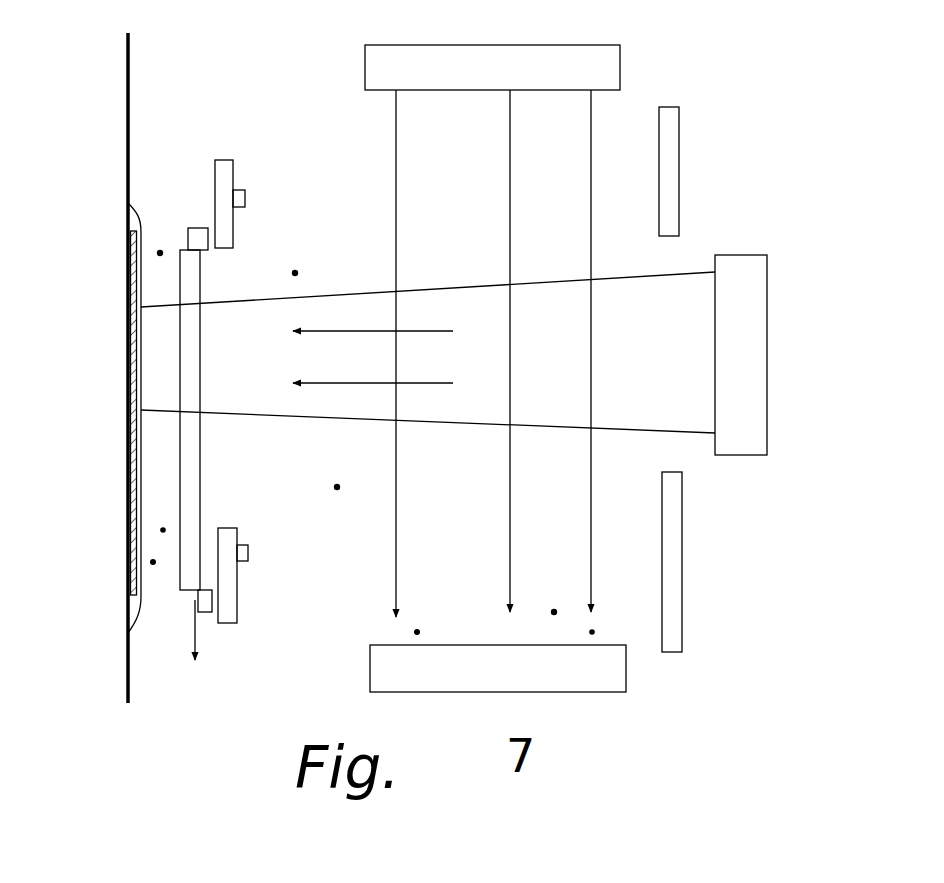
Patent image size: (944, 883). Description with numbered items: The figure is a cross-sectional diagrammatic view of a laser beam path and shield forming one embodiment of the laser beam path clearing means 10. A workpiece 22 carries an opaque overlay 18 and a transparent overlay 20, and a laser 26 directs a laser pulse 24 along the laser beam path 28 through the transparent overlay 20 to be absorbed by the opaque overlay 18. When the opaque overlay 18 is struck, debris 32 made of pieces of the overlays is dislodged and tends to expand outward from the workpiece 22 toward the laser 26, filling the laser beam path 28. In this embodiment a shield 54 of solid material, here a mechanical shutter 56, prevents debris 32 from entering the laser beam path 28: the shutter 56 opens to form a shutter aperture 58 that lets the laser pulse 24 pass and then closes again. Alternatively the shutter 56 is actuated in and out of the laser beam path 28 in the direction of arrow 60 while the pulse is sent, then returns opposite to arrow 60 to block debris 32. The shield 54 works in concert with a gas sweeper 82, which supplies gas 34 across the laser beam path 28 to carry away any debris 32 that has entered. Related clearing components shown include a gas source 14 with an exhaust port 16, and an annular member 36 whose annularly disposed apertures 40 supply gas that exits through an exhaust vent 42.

The laser beam path clearing means 10 is at (318, 164).
The gas source 14 is at (622, 50).
The exhaust port 16 is at (627, 676).
The opaque overlay 18 is at (129, 345).
The transparent overlay 20 is at (128, 218).
The workpiece 22 is at (127, 99).
The laser pulse 24 is at (413, 331).
The laser 26 is at (757, 255).
The laser beam path 28 is at (427, 413).
The debris 32 is at (160, 250).
The gas 34 is at (592, 240).
The annular member 36 is at (220, 160).
The annularly disposed apertures 40 is at (246, 199).
The exhaust vent 42 is at (670, 108).
The shield 54 is at (177, 239).
The mechanical shutter 56 is at (206, 243).
The shutter aperture 58 is at (201, 463).
The arrow 60 is at (198, 645).
The gas sweeper 82 is at (350, 46).